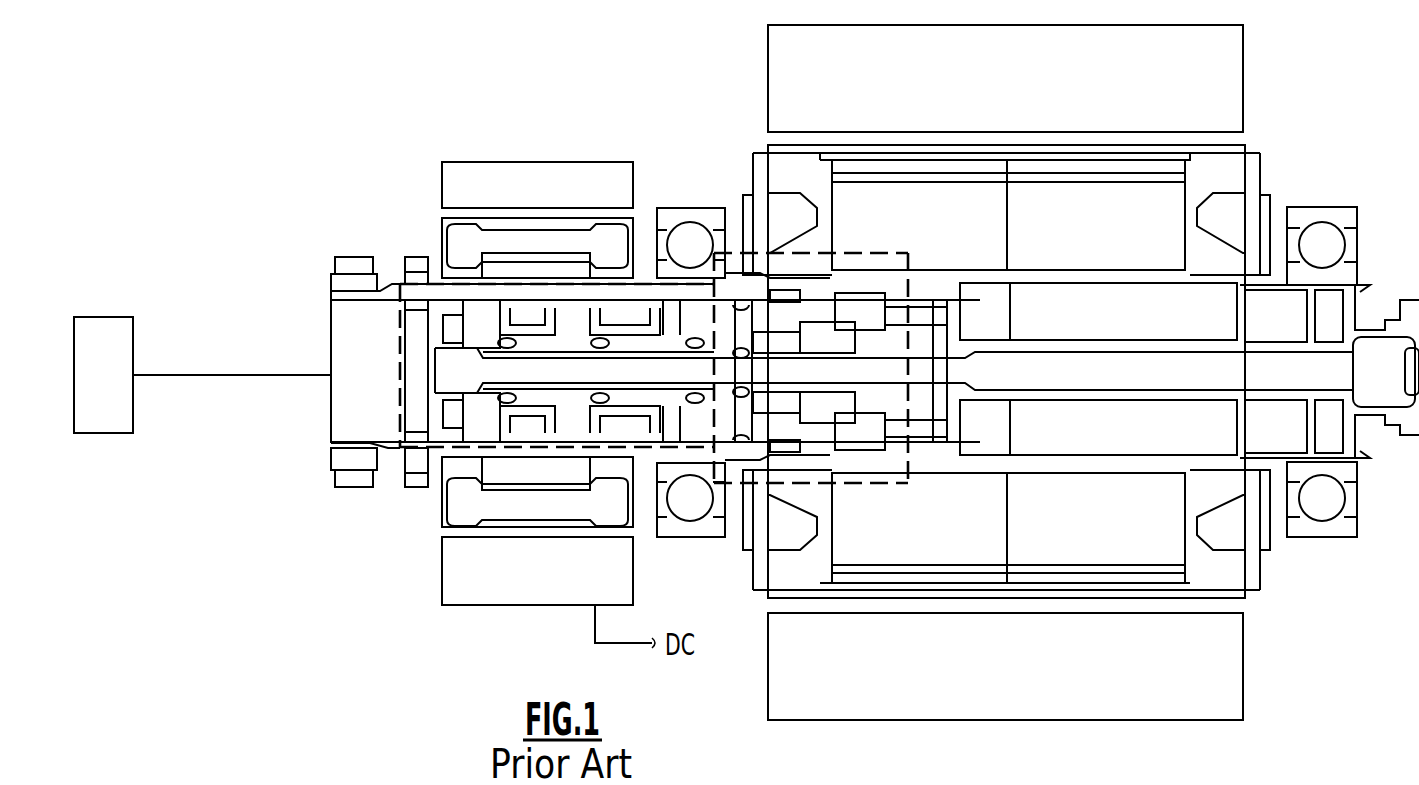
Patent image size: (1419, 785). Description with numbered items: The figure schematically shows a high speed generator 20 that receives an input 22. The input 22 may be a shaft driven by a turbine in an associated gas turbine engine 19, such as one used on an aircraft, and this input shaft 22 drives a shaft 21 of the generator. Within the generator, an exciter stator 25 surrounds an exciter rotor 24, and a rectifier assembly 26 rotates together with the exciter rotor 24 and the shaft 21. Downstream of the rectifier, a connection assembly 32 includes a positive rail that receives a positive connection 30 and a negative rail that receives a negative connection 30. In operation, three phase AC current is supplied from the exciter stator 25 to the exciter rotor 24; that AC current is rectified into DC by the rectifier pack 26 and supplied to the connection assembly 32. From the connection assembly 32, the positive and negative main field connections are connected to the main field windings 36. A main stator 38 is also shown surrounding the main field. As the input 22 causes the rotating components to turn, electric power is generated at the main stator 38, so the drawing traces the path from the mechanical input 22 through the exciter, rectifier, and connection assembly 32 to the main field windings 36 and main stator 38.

The gas turbine engine 19 is at (100, 325).
The high speed generator 20 is at (700, 86).
The shaft 21 is at (531, 292).
The input 22 is at (233, 378).
The exciter rotor 24 is at (452, 244).
The exciter stator 25 is at (597, 175).
The rectifier assembly 26 is at (452, 400).
The connection 30 is at (1100, 200).
The connection assembly 32 is at (868, 255).
The main field windings 36 is at (1252, 553).
The main stator 38 is at (827, 692).